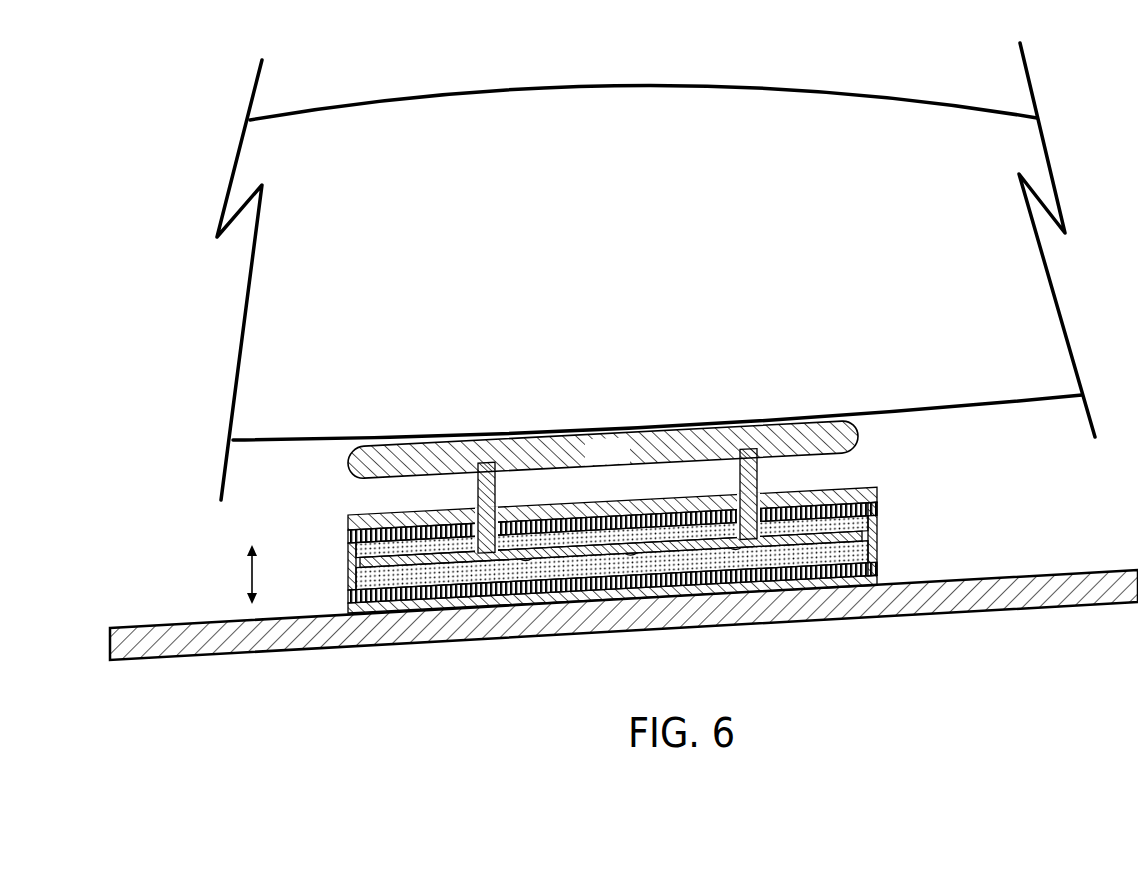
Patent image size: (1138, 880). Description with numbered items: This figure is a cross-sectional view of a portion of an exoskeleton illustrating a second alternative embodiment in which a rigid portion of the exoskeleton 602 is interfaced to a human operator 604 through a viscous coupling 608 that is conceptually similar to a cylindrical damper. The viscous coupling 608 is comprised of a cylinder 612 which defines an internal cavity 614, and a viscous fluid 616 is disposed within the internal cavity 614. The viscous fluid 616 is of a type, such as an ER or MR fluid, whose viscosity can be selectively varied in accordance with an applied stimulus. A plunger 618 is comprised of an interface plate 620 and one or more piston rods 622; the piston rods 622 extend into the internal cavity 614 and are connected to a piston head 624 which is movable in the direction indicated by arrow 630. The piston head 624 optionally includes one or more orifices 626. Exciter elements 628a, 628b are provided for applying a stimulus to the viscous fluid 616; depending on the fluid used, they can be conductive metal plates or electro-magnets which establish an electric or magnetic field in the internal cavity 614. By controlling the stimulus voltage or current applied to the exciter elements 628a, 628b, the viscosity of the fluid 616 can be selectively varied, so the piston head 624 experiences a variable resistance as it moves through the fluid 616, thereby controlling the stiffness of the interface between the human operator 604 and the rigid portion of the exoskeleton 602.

The rigid portion of an exoskeleton 602 is at (1030, 607).
The human operator 604 is at (601, 308).
The viscous coupling 608 is at (683, 517).
The cylinder 612 is at (867, 495).
The internal cavity 614 is at (869, 558).
The viscous fluid 616 is at (370, 583).
The plunger 618 is at (560, 458).
The interface plate 620 is at (626, 463).
The piston rods 622 is at (496, 497).
The piston head 624 is at (412, 567).
The orifices 626 is at (532, 562).
The exciter element 628a is at (346, 541).
The exciter element 628b is at (352, 608).
The arrow 630 is at (250, 578).